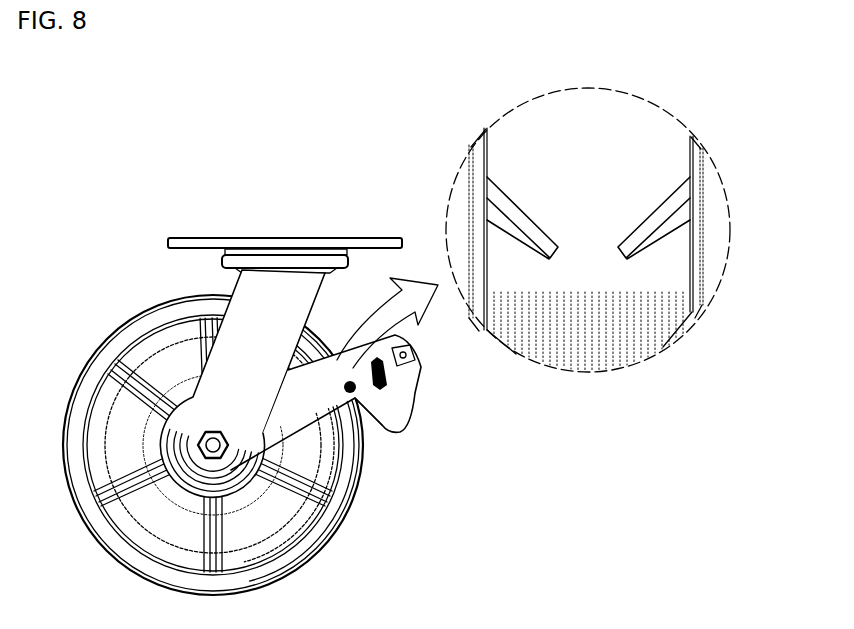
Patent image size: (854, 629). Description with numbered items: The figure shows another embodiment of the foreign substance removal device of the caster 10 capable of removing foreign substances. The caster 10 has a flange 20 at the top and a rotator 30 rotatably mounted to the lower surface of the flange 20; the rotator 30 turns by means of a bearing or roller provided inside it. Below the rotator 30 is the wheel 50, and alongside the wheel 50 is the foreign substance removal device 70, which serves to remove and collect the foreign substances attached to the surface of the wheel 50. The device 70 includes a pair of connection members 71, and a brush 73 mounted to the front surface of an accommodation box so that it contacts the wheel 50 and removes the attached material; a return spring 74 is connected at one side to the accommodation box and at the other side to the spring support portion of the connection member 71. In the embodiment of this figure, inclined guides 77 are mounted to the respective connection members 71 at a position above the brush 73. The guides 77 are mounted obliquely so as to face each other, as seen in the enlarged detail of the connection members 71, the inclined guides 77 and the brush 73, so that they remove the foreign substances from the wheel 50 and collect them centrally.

The caster 10 is at (128, 203).
The flange 20 is at (200, 237).
The rotator 30 is at (222, 258).
The wheel 50 is at (92, 360).
The foreign substance removal device 70 is at (403, 434).
The connection member 71 is at (494, 152).
The brush 73 is at (363, 405).
The return spring 74 is at (383, 384).
The inclined guide 77 is at (350, 370).